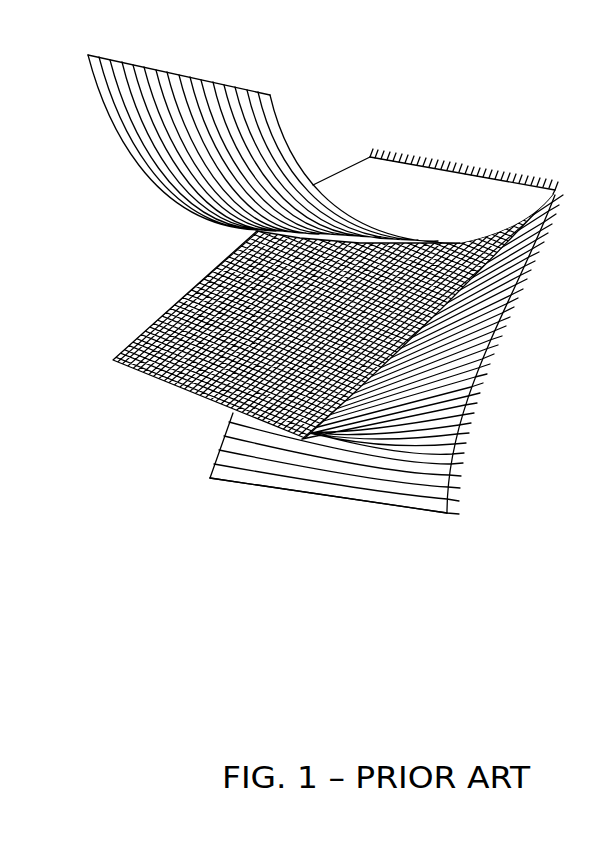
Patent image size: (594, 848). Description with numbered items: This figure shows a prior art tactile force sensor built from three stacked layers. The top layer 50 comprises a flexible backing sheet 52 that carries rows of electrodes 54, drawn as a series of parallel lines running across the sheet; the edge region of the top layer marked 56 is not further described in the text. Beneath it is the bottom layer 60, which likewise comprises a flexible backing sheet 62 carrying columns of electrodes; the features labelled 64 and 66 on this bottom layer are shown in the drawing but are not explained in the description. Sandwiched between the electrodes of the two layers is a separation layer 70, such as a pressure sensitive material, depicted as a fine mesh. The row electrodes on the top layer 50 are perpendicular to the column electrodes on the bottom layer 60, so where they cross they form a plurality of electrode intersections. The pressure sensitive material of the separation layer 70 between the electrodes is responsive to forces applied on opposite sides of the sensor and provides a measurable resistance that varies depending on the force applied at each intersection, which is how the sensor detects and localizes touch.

The top layer 50 is at (323, 133).
The flexible backing sheet 52 is at (328, 178).
The rows of electrodes 54 is at (191, 76).
The hatched edge of upper sheet 56 is at (449, 171).
The bottom layer 60 is at (373, 365).
The flexible backing sheet 62 is at (316, 494).
The left edge of lower sheet 64 is at (232, 413).
The fold curve of lower sheet 66 is at (450, 496).
The separation layer 70 is at (163, 316).